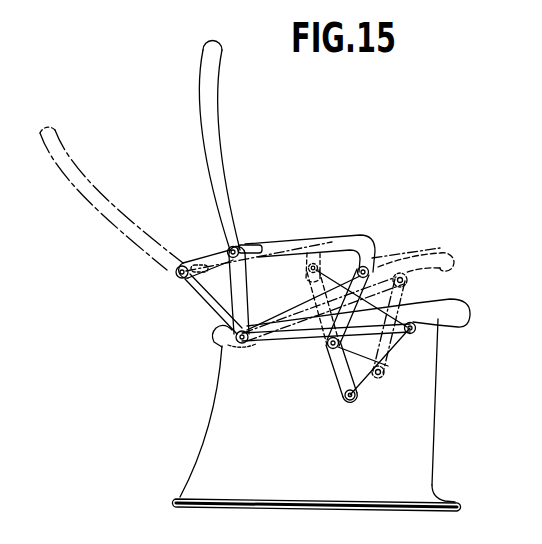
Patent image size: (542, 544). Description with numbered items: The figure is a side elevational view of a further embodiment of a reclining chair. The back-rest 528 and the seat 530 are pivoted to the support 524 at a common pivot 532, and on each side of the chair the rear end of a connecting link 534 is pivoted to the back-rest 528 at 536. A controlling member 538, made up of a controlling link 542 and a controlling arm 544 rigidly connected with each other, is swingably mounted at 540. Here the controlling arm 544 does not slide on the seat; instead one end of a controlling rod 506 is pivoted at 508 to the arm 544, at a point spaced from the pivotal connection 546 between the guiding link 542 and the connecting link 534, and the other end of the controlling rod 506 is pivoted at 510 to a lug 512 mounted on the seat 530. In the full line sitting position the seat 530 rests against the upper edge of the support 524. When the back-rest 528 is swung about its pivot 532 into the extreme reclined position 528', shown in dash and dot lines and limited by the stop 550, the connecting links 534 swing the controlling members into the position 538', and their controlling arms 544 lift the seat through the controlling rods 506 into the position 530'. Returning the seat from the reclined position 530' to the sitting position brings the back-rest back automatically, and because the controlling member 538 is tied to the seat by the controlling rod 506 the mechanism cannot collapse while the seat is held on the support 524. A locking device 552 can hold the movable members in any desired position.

The back-rest 528 is at (228, 146).
The extreme reclined position of back-rest 528' is at (111, 198).
The pivot between connecting link and back-rest 536 is at (236, 249).
The locking device 552 is at (251, 245).
The connecting link 534 is at (329, 243).
The position of controlling member in reclined condition 538' is at (356, 299).
The pivotal connection between guiding link and connecting link 546 is at (369, 266).
The controlling link 542 is at (371, 268).
The reclined position of seat 530' is at (370, 287).
The controlling member 538 is at (386, 307).
The lug 512 is at (445, 325).
The pivot between controlling rod and lug 510 is at (438, 345).
The seat 530 is at (326, 317).
The pivot of back-rest and seat on support 532 is at (245, 345).
The stop 550 is at (212, 333).
The swing mounting of controlling member 540 is at (325, 352).
The controlling arm 544 is at (343, 378).
The pivot between controlling rod and controlling arm 508 is at (352, 401).
The controlling rod 506 is at (367, 382).
The support 524 is at (211, 437).